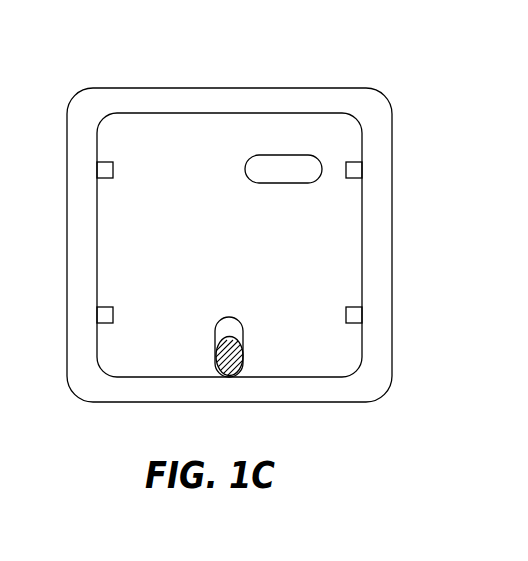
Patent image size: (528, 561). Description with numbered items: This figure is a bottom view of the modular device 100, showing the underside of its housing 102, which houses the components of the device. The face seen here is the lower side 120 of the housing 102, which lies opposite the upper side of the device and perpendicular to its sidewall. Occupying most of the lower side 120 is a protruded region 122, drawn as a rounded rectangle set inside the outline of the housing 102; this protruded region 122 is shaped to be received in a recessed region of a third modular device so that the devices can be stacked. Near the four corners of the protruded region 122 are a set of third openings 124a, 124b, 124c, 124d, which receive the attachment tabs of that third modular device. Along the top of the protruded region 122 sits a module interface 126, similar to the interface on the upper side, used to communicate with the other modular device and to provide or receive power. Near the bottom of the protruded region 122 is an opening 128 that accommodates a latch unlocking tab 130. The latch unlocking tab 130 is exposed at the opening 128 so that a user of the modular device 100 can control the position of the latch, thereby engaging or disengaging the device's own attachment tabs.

The modular device 100 is at (325, 48).
The lower side 120 is at (425, 98).
The housing 102 is at (392, 176).
The protruded region 122 is at (202, 113).
The third opening 124a is at (106, 162).
The third opening 124b is at (106, 307).
The third opening 124c is at (356, 180).
The third opening 124d is at (353, 307).
The module interface 126 is at (260, 184).
The opening 128 is at (215, 333).
The latch unlocking tab 130 is at (244, 352).